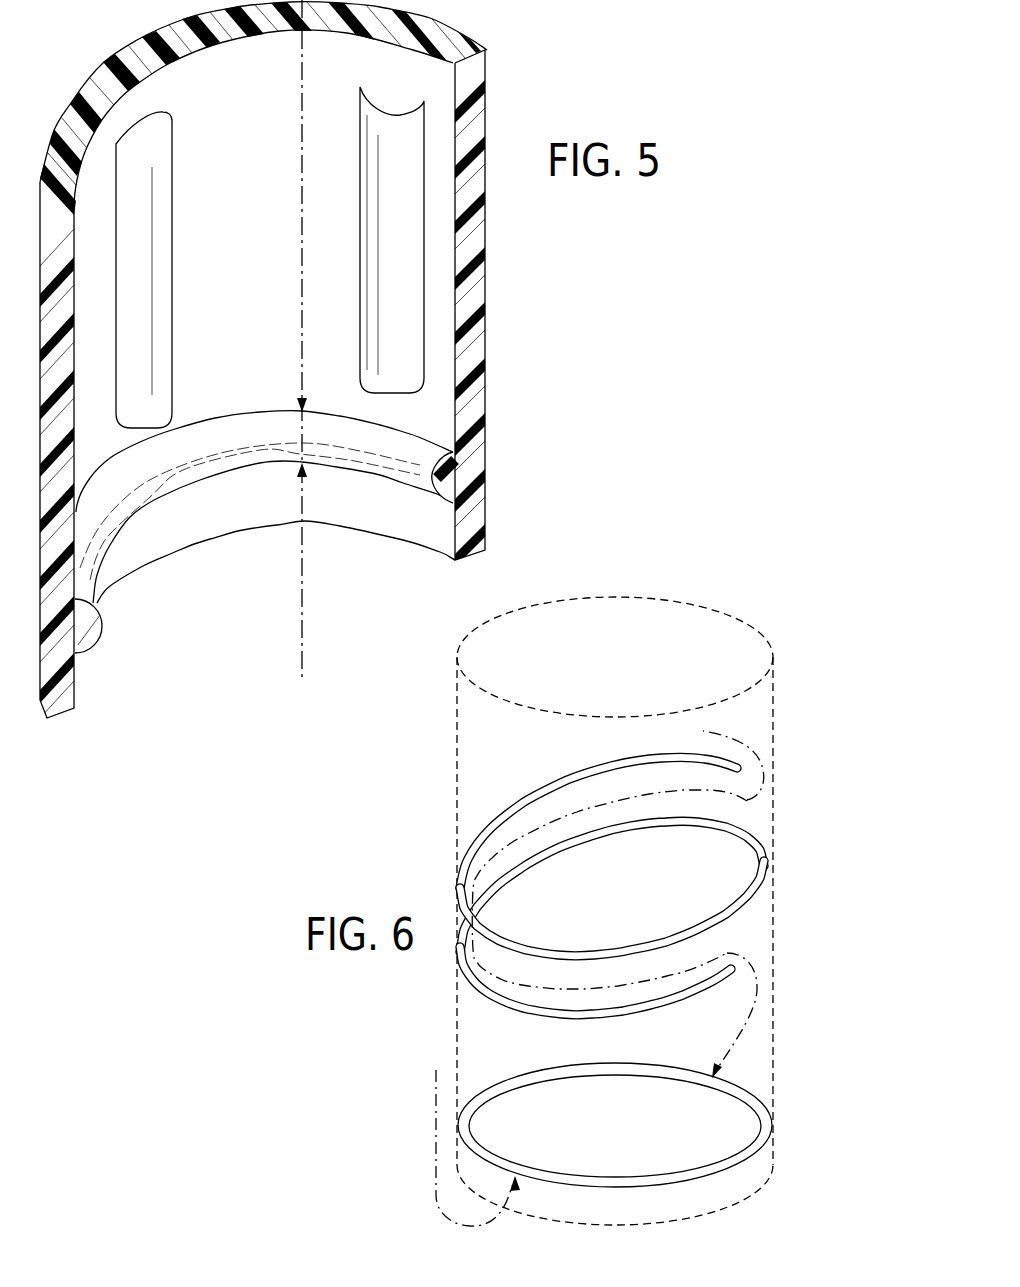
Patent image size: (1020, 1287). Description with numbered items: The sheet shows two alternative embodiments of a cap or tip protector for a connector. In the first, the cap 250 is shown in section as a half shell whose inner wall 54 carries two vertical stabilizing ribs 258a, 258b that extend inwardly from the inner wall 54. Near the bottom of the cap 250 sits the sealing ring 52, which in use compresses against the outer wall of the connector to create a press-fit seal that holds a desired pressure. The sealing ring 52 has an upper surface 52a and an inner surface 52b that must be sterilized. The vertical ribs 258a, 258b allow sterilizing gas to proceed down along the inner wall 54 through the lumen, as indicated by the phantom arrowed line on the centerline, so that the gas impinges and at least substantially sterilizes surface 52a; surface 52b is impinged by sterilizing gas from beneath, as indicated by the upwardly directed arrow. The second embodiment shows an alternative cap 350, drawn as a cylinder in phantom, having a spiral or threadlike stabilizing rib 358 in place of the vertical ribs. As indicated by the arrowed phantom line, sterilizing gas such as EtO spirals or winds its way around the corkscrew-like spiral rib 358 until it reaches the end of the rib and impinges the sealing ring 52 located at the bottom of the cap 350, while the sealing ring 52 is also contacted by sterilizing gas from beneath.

In FIG. 5, the cap 250 is at (487, 50).
In FIG. 5, the inner wall 54 is at (254, 238).
In FIG. 5, the vertical stabilizing rib 258a is at (168, 182).
In FIG. 5, the vertical stabilizing rib 258b is at (402, 247).
In FIG. 5, the sealing ring 52 is at (445, 482).
In FIG. 6, the sealing ring 52 is at (773, 1122).
In FIG. 5, the surface of sealing ring 52a is at (417, 447).
In FIG. 5, the surface of sealing ring 52b is at (389, 467).
In FIG. 6, the cap 350 is at (774, 657).
In FIG. 6, the spiral stabilizing rib 358 is at (773, 848).